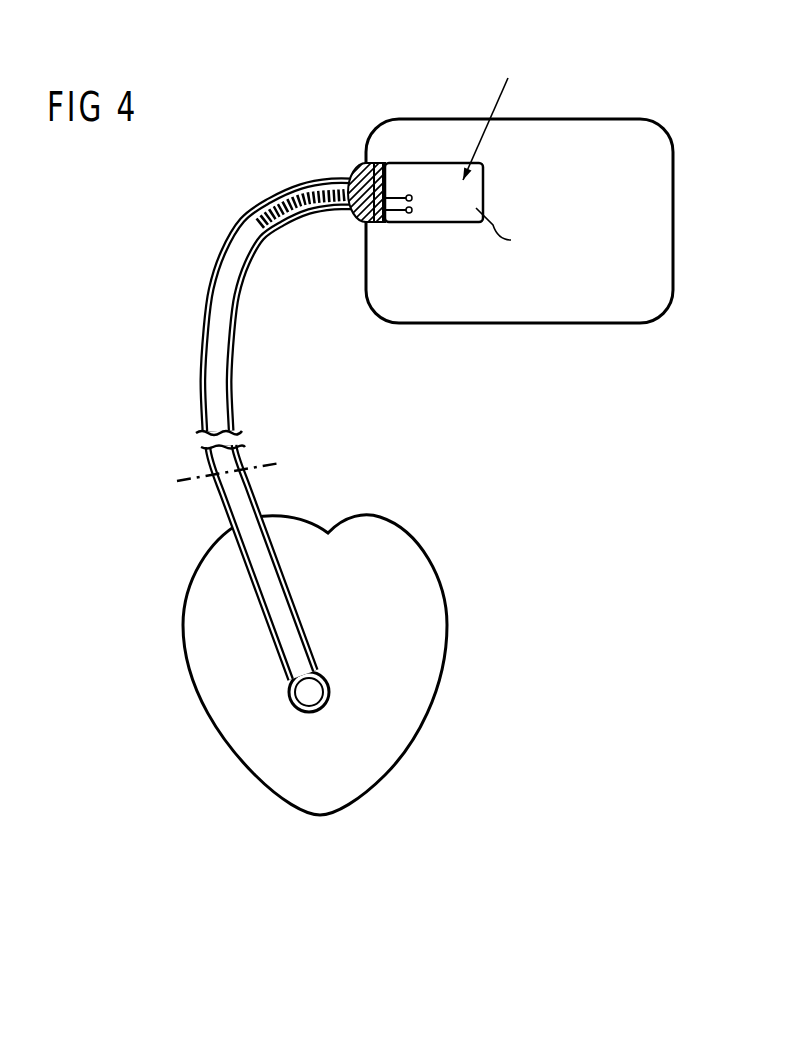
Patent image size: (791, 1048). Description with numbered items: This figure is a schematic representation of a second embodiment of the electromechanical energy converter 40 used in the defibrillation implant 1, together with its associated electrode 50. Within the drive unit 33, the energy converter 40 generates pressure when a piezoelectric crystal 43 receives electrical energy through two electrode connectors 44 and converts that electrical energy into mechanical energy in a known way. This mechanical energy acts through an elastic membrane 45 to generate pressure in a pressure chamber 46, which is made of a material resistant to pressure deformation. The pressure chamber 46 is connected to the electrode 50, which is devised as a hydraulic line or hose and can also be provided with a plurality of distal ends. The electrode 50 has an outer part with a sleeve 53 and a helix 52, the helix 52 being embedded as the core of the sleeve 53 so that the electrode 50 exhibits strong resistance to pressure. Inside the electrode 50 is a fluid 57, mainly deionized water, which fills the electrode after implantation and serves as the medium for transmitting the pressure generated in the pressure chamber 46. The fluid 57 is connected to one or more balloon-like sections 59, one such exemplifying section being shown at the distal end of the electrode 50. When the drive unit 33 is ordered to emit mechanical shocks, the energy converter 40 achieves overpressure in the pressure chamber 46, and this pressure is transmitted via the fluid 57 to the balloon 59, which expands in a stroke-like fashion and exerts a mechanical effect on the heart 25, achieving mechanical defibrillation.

The defibrillation implant 1 is at (565, 323).
The heart 25 is at (429, 556).
The drive unit 33 is at (487, 178).
The electromechanical energy converter 40 is at (421, 180).
The piezoelectric crystal 43 is at (387, 163).
The electrode connectors 44 is at (418, 200).
The elastic membrane 45 is at (377, 222).
The pressure chamber 46 is at (358, 167).
The electrode 50 is at (226, 214).
The helix 52 is at (293, 182).
The sleeve 53 is at (220, 257).
The fluid 57 is at (212, 375).
The balloon-like section 59 is at (316, 690).